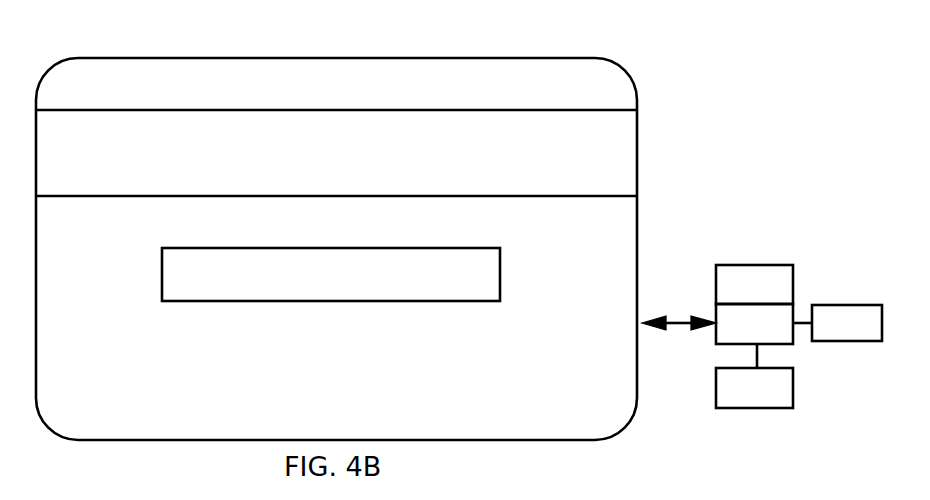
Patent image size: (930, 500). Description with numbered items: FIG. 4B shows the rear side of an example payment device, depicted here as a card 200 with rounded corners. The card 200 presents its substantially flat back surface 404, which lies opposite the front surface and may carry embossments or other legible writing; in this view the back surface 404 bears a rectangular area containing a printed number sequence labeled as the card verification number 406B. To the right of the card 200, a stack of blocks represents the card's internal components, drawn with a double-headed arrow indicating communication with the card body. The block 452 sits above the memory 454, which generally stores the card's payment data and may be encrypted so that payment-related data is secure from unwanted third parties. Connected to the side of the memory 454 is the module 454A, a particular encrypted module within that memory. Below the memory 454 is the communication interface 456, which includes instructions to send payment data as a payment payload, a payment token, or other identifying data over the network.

The transaction card 200 is at (148, 62).
The back surface 404 is at (617, 238).
The card verification number (CVN) 406B is at (468, 254).
The communication interface 452 is at (754, 284).
The memory 454 is at (764, 336).
The module 454A is at (847, 323).
The communication interface 456 is at (754, 388).